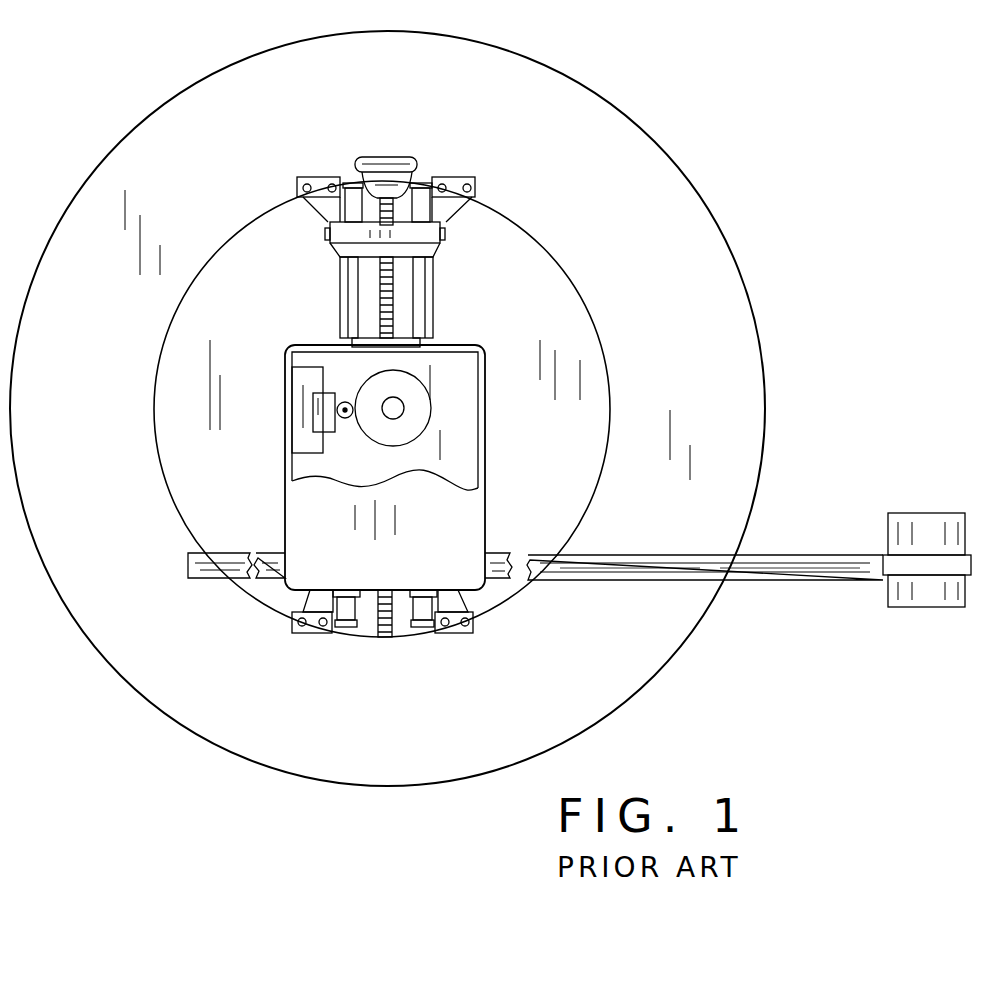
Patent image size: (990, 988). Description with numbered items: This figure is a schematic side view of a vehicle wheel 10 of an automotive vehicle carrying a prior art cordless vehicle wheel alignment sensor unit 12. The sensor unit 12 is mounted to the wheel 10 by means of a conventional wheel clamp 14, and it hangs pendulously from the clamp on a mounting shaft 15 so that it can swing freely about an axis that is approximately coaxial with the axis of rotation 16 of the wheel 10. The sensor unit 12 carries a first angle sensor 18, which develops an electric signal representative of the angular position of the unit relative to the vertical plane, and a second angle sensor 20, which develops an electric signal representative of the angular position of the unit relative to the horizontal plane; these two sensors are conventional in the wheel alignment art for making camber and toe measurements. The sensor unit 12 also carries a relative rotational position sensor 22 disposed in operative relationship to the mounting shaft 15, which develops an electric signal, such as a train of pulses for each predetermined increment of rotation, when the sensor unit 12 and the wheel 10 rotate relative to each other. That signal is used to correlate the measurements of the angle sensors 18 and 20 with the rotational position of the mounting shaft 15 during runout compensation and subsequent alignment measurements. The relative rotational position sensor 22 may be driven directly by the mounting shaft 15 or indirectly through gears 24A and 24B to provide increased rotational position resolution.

The vehicle wheel 10 is at (592, 641).
The cordless vehicle wheel alignment sensor unit 12 is at (486, 464).
The wheel clamp 14 is at (433, 292).
The mounting shaft 15 is at (398, 393).
The axis of rotation 16 is at (404, 407).
The first angle sensor 18 is at (303, 412).
The second angle sensor 20 is at (900, 512).
The relative rotational position sensor 22 is at (315, 418).
The gear 24A is at (360, 386).
The gear 24B is at (347, 426).